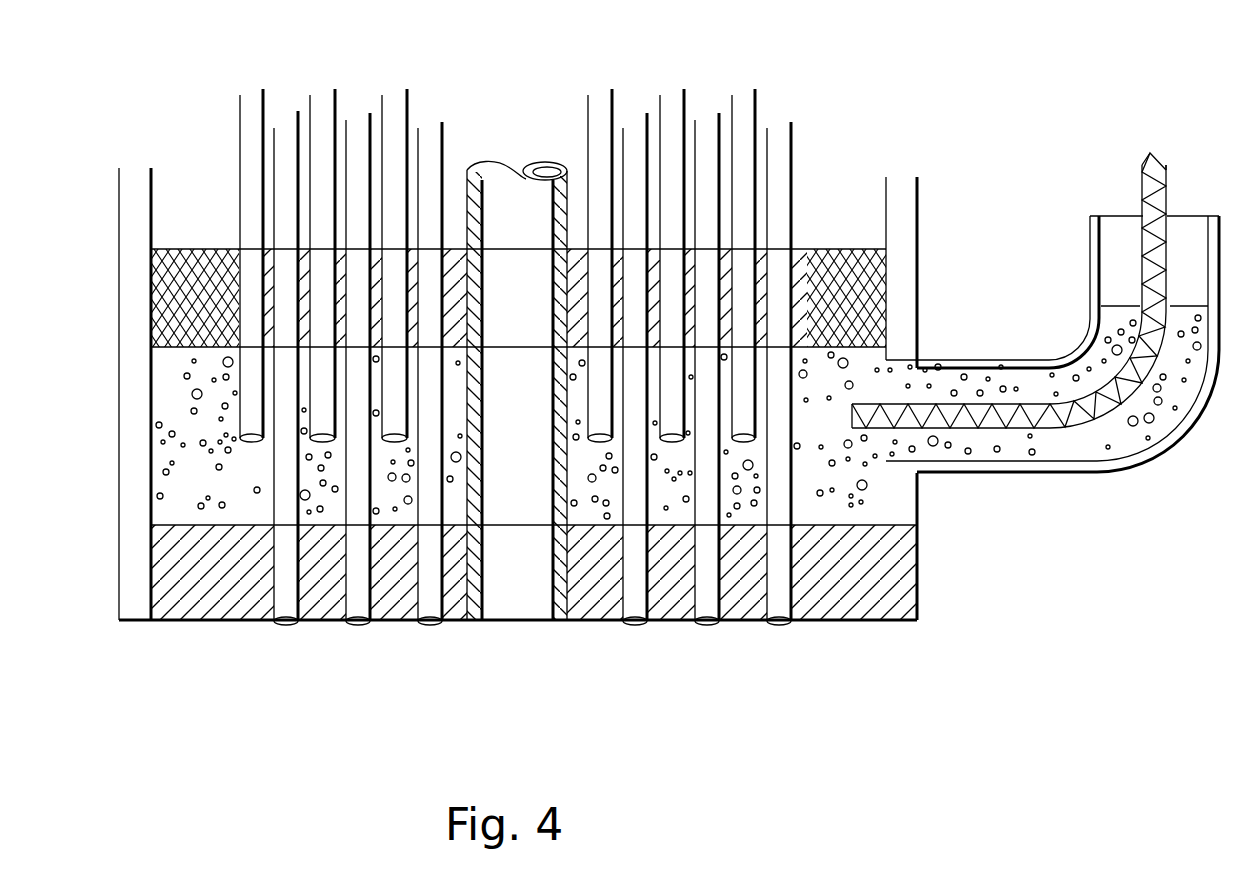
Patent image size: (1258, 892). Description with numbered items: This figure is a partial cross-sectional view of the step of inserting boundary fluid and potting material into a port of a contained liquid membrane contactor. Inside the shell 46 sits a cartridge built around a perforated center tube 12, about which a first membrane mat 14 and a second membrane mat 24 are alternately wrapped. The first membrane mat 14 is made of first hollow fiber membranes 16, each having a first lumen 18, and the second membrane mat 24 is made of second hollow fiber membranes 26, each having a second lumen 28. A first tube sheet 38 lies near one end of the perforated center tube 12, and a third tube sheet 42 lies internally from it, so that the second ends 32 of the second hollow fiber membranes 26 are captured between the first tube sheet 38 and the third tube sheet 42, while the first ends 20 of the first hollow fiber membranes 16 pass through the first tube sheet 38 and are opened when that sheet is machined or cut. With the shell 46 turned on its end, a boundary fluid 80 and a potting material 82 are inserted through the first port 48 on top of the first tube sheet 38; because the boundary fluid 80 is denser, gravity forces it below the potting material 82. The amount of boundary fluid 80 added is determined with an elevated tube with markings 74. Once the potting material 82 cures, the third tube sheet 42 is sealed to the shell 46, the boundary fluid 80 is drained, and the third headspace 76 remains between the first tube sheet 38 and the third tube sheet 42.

The perforated center tube 12 is at (542, 163).
The first membrane mat 14 is at (532, 408).
The first hollow fiber membranes 16 is at (532, 408).
The first lumen 18 is at (532, 408).
The first end 20 is at (637, 625).
The second membrane mat 24 is at (640, 295).
The second hollow fiber membranes 26 is at (640, 295).
The second lumen 28 is at (640, 295).
The second end 32 is at (747, 442).
The first tube sheet 38 is at (742, 580).
The third tube sheet 42 is at (797, 255).
The shell 46 is at (136, 130).
The first port 48 is at (1154, 120).
The elevated tube with markings 74 is at (1195, 413).
The third headspace 76 is at (248, 495).
The boundary fluid 80 is at (1065, 442).
The potting material 82 is at (1000, 417).